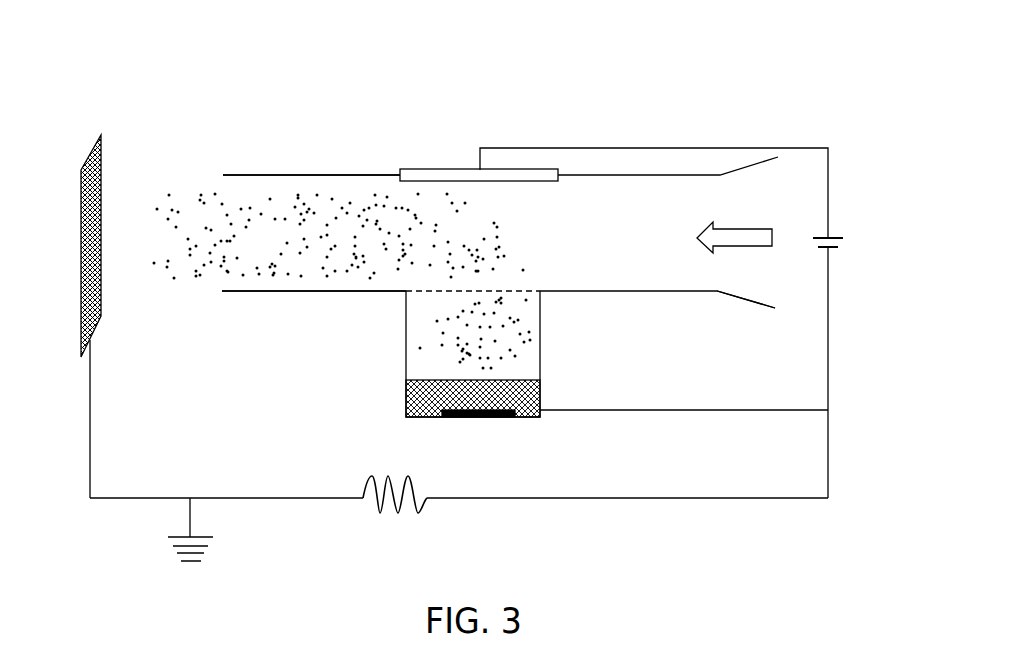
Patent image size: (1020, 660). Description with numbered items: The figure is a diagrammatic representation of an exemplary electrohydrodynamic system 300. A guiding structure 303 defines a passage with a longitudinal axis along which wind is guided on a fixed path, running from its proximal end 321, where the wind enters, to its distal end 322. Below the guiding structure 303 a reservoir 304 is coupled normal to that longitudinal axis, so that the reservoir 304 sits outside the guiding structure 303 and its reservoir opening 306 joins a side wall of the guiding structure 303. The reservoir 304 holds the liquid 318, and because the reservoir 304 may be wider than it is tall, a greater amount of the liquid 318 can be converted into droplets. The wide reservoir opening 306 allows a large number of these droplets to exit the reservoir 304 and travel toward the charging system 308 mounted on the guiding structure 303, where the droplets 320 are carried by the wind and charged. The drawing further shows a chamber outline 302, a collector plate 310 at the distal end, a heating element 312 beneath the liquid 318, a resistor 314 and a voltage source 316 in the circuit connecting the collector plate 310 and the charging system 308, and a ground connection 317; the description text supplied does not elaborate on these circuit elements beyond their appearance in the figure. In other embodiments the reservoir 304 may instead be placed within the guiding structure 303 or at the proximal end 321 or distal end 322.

The EHD system 300 is at (772, 83).
The chamber 302 is at (762, 211).
The guiding structure 303 is at (312, 175).
The reservoir 304 is at (540, 345).
The reservoir opening 306 is at (527, 291).
The charging system 308 is at (436, 170).
The substrate 310 is at (103, 146).
The heater 312 is at (500, 418).
The resistor 314 is at (413, 485).
The voltage source 316 is at (824, 252).
The ground 317 is at (205, 537).
The liquid 318 is at (406, 400).
The particles 320 is at (328, 272).
The proximal end 321 is at (745, 300).
The distal end 322 is at (235, 291).